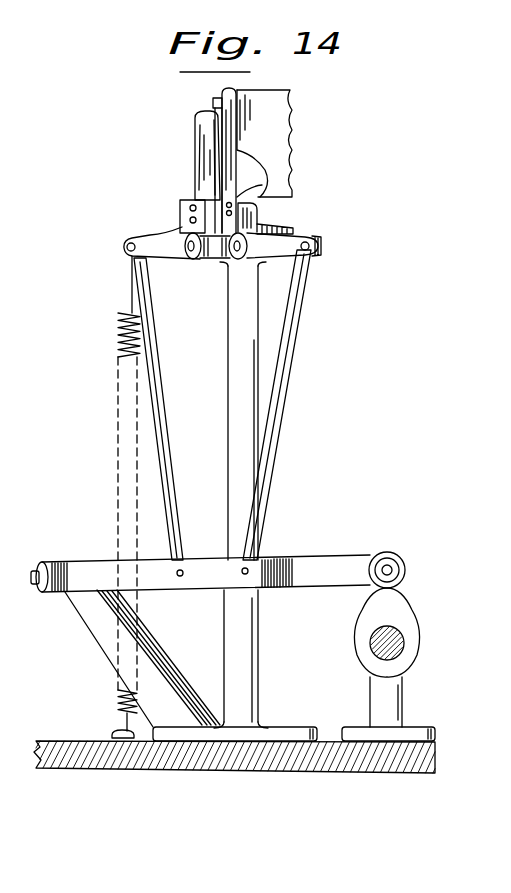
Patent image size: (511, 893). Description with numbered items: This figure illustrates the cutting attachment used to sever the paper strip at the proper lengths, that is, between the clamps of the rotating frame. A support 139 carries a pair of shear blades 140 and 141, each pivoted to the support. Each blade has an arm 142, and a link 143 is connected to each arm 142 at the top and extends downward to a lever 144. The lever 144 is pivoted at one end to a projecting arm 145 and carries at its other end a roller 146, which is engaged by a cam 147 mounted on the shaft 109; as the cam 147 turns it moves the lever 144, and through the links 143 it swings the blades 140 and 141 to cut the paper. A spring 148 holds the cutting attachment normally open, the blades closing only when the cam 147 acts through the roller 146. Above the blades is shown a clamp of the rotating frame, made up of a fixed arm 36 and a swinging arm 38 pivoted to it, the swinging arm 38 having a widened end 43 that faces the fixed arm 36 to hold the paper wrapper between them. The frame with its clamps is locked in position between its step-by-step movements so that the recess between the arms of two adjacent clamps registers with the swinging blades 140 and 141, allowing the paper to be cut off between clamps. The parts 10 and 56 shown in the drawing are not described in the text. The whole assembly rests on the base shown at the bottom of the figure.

The base plate 10 is at (412, 760).
The fixed arm 36 is at (213, 103).
The swinging arm 38 is at (253, 103).
The widened end of swinging arm 43 is at (262, 183).
The plate 56 is at (292, 152).
The shaft 109 is at (472, 672).
The support 139 is at (340, 428).
The blade 140 is at (200, 185).
The blade 141 is at (262, 200).
The arm 142 is at (382, 250).
The link 143 is at (345, 384).
The lever 144 is at (350, 540).
The projecting arm 145 is at (108, 648).
The roller 146 is at (458, 583).
The cam 147 is at (476, 628).
The spring 148 is at (98, 717).